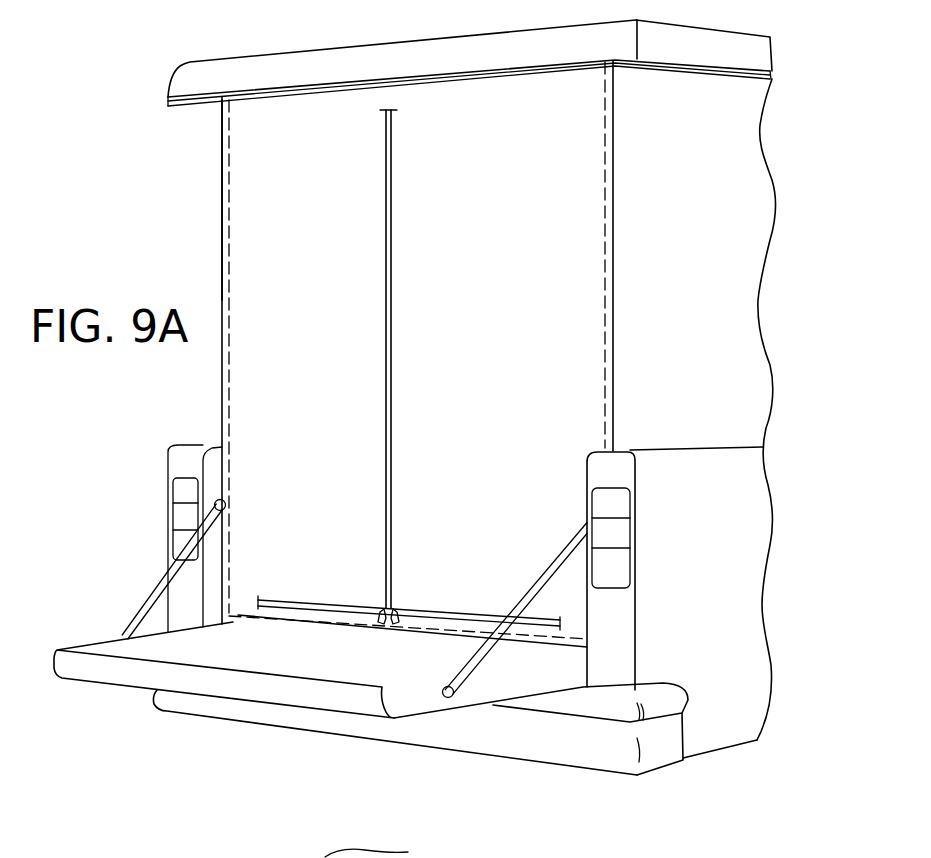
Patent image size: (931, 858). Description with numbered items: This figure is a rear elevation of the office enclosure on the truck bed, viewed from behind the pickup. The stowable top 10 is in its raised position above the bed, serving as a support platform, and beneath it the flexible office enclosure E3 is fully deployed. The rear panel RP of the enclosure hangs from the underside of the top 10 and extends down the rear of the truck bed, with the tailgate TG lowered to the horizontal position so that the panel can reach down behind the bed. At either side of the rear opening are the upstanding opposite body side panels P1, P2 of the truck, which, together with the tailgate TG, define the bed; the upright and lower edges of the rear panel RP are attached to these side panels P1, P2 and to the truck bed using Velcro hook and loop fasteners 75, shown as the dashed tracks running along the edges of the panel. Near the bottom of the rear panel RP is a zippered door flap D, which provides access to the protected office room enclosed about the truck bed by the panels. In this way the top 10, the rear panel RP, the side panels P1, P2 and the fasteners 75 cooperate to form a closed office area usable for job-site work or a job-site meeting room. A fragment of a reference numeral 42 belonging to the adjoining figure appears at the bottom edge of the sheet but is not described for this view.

The stowable top 10 is at (374, 68).
The flexible office enclosure E3 is at (219, 147).
The rear panel RP is at (247, 198).
The Velcro (hook and loop) fasteners 75 is at (229, 256).
The body side panel P2 is at (178, 462).
The body side panel P1 is at (725, 597).
The zippered door flap D is at (365, 608).
The tailgate TG is at (108, 672).
The partial element of next figure 42 is at (387, 852).